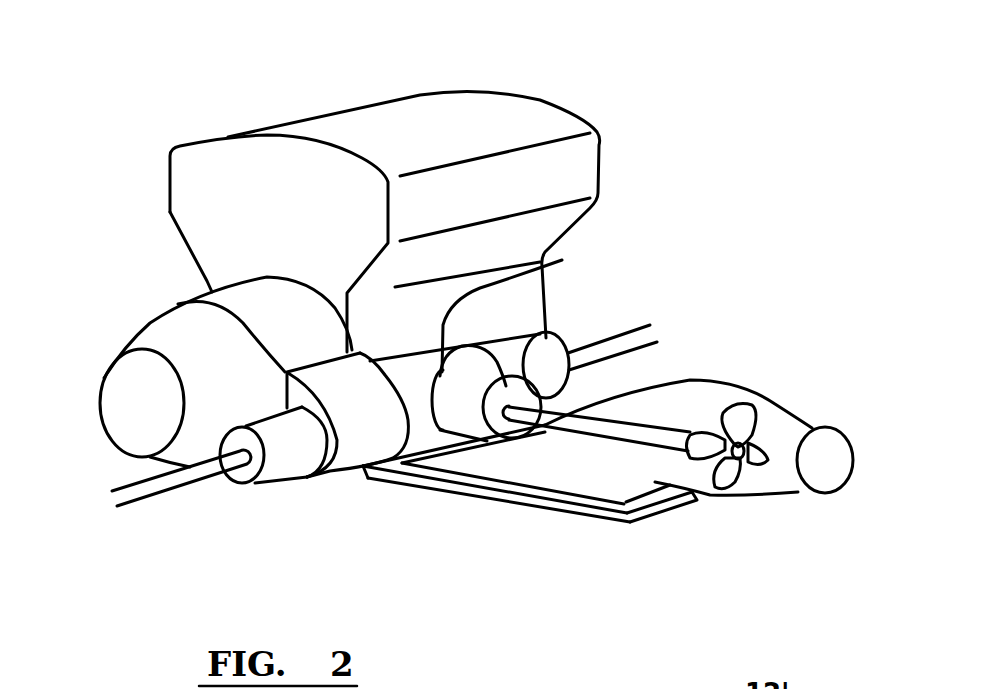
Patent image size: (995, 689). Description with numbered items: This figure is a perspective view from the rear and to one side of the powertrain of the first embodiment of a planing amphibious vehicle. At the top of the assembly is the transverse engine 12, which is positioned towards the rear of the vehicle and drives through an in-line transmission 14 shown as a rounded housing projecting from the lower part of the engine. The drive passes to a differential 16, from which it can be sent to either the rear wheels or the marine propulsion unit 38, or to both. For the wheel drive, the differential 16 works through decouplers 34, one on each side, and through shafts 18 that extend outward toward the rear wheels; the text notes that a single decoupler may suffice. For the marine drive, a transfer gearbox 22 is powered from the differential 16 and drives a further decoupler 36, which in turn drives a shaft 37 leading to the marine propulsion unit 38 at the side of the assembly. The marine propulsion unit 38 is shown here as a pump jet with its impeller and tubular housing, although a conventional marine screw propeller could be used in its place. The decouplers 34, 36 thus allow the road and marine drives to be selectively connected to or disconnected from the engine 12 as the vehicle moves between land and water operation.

The transverse engine 12 is at (463, 115).
The in-line transmission 14 is at (178, 333).
The differential 16 is at (370, 430).
The shaft 18 is at (150, 485).
The transfer gearbox 22 is at (548, 258).
The decoupler 34 is at (288, 447).
The further decoupler 36 is at (462, 422).
The shaft 37 is at (603, 430).
The marine propulsion unit 38 is at (685, 381).